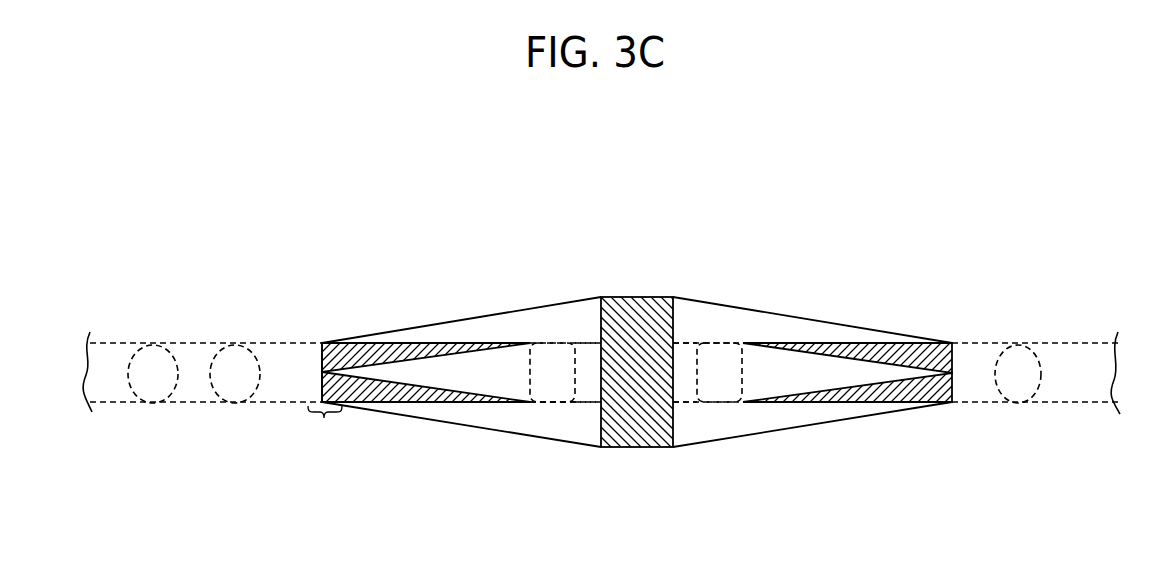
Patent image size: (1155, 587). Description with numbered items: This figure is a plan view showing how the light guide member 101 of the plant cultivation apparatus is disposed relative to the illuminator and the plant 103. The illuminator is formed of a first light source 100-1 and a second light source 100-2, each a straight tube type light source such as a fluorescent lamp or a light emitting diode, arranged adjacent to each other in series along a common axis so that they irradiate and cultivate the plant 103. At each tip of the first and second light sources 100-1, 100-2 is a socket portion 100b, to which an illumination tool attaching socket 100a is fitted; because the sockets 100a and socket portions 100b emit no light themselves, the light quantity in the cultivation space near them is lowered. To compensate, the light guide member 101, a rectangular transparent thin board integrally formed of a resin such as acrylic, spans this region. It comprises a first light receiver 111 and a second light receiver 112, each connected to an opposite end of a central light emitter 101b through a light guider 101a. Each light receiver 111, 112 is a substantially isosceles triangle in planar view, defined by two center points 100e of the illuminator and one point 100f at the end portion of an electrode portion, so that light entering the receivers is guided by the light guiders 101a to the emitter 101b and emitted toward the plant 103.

The first light source 100-1 is at (272, 410).
The second light source 100-2 is at (738, 332).
The illumination tool attaching socket 100a is at (588, 405).
The socket portion 100b is at (552, 410).
The center point of illuminator 100e is at (320, 402).
The point in end portion of electrode portion 100f is at (530, 401).
The light guide member 101 is at (732, 248).
The light guider 101a is at (472, 417).
The light emitter 101b is at (632, 320).
The plant 103 is at (157, 403).
The first light receiver 111 is at (362, 348).
The second light receiver 112 is at (893, 387).